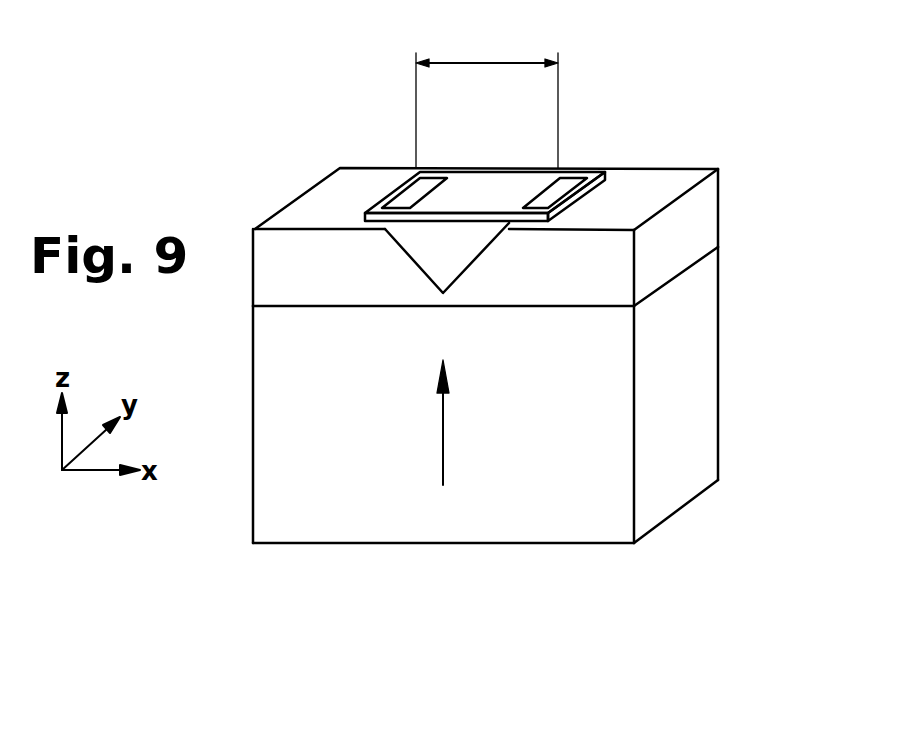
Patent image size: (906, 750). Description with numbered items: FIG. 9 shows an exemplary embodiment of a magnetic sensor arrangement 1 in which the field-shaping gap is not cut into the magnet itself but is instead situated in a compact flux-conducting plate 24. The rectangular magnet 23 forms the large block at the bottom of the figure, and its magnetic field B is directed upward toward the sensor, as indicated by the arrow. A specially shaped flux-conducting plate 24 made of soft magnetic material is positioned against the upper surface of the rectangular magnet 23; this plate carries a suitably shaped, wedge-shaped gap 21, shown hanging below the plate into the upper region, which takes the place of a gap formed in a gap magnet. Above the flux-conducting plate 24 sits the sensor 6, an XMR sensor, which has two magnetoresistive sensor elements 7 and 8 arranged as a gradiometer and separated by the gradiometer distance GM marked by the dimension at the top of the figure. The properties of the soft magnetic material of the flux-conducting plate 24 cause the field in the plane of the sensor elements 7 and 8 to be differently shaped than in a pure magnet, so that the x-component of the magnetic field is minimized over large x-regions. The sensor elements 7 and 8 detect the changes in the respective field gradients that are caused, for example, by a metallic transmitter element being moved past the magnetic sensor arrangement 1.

The magnetic sensor arrangement 1 is at (537, 392).
The sensor 6 is at (492, 159).
The magnetoresistive sensor element 7 is at (432, 183).
The magnetoresistive sensor element 8 is at (567, 187).
The gap 21 is at (430, 253).
The magnet 23 is at (687, 304).
The flux-conducting plate 24 is at (687, 230).
The gradiometer distance GM is at (485, 62).
The magnetic field B is at (443, 435).